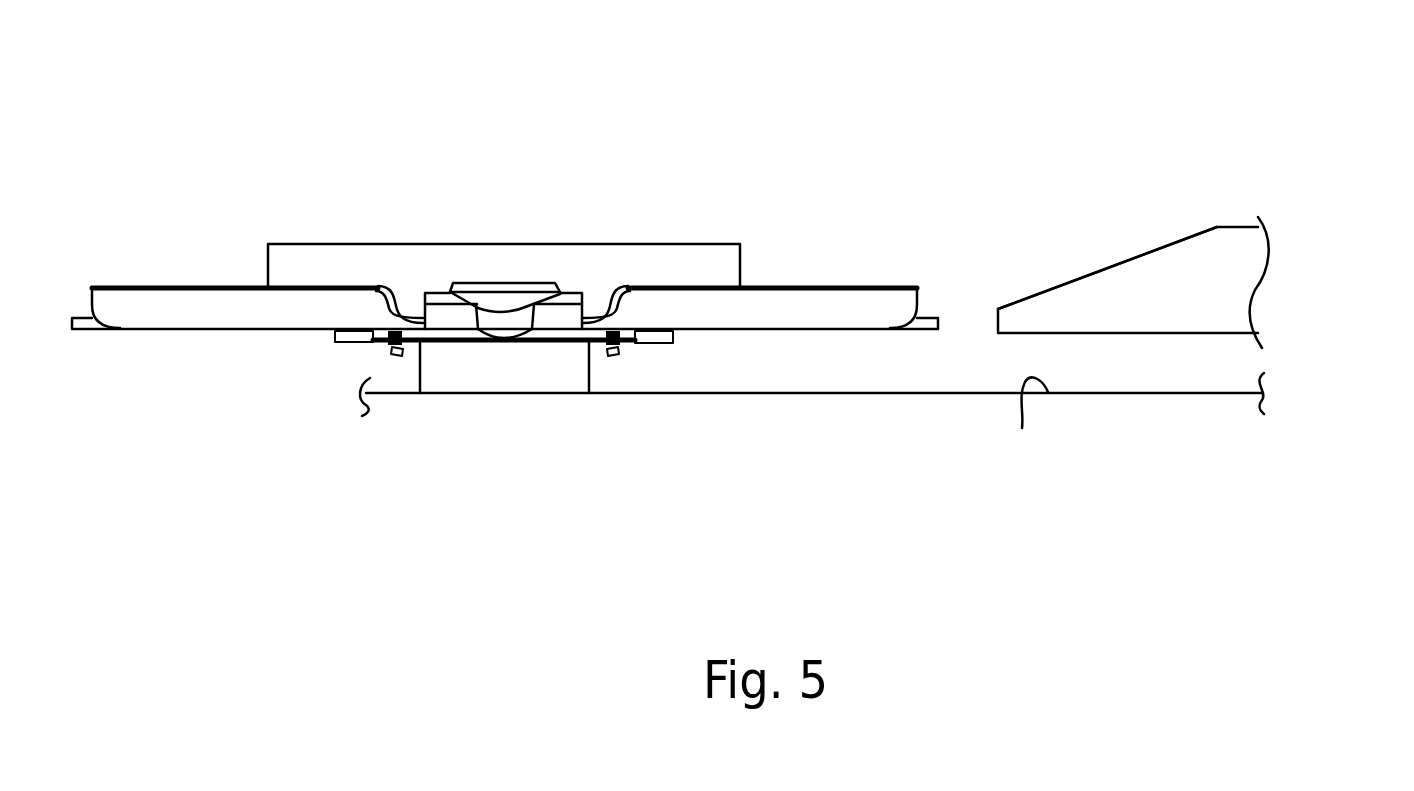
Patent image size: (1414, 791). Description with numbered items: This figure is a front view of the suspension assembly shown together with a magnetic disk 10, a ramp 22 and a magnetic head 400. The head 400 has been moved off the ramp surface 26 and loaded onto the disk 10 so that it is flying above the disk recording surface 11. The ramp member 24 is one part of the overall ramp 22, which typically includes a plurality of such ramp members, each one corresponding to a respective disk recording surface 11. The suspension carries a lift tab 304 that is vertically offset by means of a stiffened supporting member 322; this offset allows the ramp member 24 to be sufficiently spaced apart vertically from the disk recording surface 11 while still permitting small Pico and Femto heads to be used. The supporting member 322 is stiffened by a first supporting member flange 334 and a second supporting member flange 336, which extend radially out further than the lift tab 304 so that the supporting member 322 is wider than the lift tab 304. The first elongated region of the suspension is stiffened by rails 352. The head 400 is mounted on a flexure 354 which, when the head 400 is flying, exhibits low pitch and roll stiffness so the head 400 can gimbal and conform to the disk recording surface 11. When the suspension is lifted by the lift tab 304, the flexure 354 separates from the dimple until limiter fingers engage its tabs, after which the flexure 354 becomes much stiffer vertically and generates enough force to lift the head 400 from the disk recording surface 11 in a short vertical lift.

The magnetic disk 10 is at (1167, 423).
The disk recording surface 11 is at (1027, 421).
The ramp 22 is at (1298, 228).
The ramp member 24 is at (1140, 277).
The ramp surface 26 is at (1057, 285).
The lift tab 304 is at (465, 283).
The supporting member 322 is at (503, 319).
The first supporting member flange 334 is at (436, 291).
The second supporting member flange 336 is at (570, 290).
The rails 352 is at (386, 349).
The flexure 354 is at (334, 346).
The magnetic head 400 is at (589, 377).